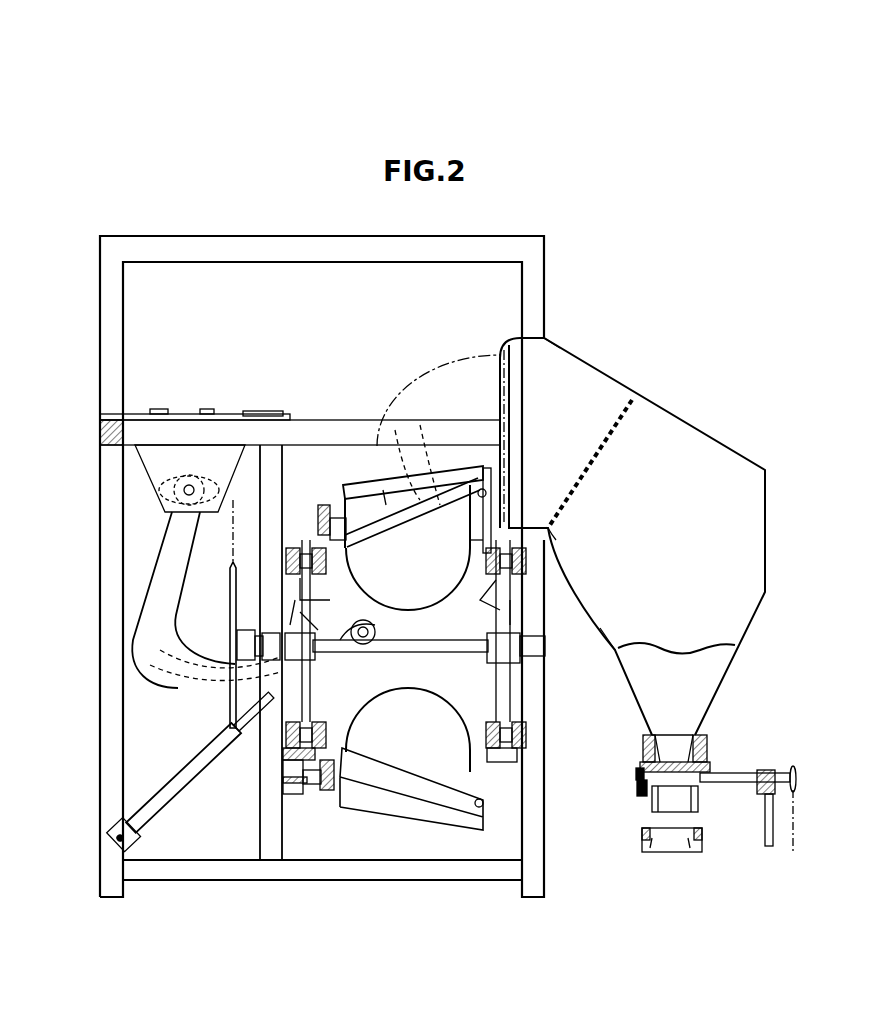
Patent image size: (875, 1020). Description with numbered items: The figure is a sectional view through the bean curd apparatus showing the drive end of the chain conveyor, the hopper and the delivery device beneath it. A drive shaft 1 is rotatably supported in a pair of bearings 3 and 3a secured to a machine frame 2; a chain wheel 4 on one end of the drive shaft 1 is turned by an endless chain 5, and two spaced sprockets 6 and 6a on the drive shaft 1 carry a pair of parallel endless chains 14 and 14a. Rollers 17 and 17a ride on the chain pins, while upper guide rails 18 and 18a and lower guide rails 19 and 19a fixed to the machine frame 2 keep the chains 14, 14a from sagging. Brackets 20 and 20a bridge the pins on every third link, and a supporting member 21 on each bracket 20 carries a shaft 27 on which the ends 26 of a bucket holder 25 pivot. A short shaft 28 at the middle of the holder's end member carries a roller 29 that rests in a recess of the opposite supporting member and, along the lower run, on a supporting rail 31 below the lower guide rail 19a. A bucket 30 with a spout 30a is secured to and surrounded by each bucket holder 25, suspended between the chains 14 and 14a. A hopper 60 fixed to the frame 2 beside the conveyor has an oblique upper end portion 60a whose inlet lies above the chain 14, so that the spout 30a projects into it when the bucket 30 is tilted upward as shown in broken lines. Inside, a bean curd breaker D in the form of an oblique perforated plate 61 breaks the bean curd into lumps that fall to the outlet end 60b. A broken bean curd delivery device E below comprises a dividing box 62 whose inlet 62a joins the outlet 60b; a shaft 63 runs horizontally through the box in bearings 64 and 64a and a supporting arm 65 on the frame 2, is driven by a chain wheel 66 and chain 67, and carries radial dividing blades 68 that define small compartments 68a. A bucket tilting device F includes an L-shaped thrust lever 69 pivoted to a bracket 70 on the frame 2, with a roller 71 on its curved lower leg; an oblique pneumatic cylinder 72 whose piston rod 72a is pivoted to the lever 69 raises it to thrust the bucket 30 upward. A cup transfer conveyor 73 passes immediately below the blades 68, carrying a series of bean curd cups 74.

The drive shaft 1 is at (445, 650).
The machine frame 2 is at (333, 420).
The bearing 3 is at (546, 645).
The bearing 3a is at (270, 630).
The chain wheel 4 is at (230, 612).
The endless chain 5 is at (225, 520).
The sprocket 6 is at (495, 684).
The sprocket 6a is at (305, 705).
The endless chain 14 is at (556, 536).
The endless chain 14a is at (300, 545).
The roller 17 is at (500, 605).
The roller 17a is at (310, 600).
The upper guide rail 18 is at (522, 576).
The upper guide rail 18a is at (322, 626).
The lower guide rail 19 is at (522, 750).
The lower guide rail 19a is at (285, 762).
The angle-shaped bracket 20 is at (484, 594).
The bracket 20a is at (312, 576).
The supporting member 21 is at (500, 512).
The bucket holder 25 is at (432, 540).
The end of bucket holder 26 is at (500, 478).
The shaft 27 is at (490, 490).
The short shaft 28 is at (338, 510).
The roller 29 is at (320, 520).
The bucket 30 is at (383, 490).
The spout 30a is at (484, 465).
The supporting rail 31 is at (315, 790).
The hopper 60 is at (766, 550).
The upper end portion 60a is at (548, 348).
The outlet end 60b is at (640, 678).
The perforated plate 61 is at (632, 400).
The dividing box 62 is at (708, 742).
The inlet 62a is at (675, 735).
The shaft 63 is at (640, 790).
The bearing 64 is at (710, 768).
The bearing 64a is at (640, 772).
The supporting arm 65 is at (768, 840).
The chain wheel 66 is at (796, 778).
The chain 67 is at (793, 828).
The dividing blade 68 is at (700, 800).
The small compartment 68a is at (645, 838).
The thrust lever 69 is at (160, 674).
The bracket 70 is at (140, 462).
The roller 71 is at (377, 632).
The pneumatic cylinder 72 is at (185, 785).
The piston rod 72a is at (160, 668).
The cup transfer conveyor 73 is at (655, 848).
The bean curd cup 74 is at (690, 848).
The bean curd breaker D is at (628, 440).
The broken bean curd delivery device E is at (635, 748).
The bucket tilting device F is at (150, 545).